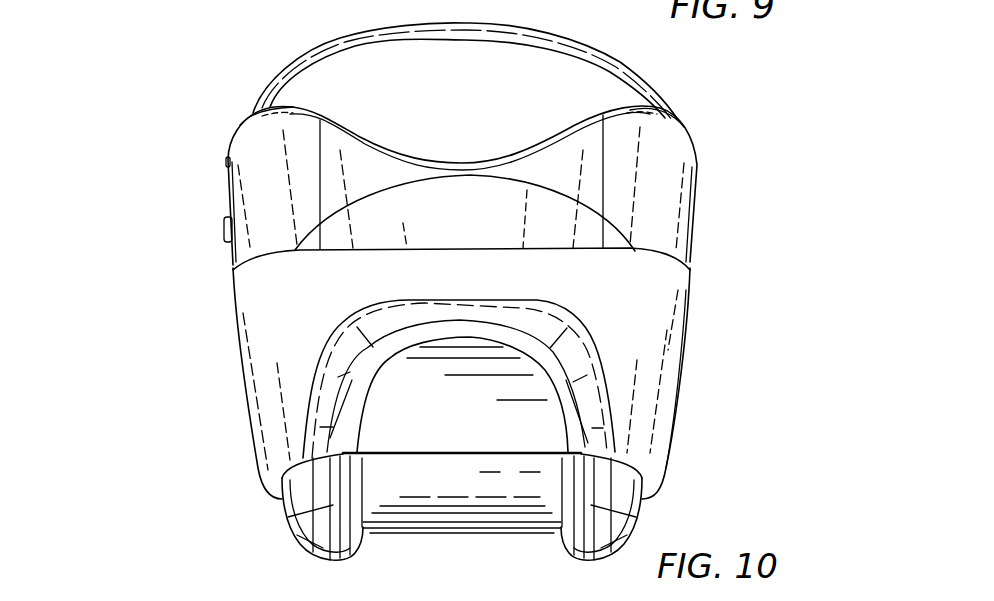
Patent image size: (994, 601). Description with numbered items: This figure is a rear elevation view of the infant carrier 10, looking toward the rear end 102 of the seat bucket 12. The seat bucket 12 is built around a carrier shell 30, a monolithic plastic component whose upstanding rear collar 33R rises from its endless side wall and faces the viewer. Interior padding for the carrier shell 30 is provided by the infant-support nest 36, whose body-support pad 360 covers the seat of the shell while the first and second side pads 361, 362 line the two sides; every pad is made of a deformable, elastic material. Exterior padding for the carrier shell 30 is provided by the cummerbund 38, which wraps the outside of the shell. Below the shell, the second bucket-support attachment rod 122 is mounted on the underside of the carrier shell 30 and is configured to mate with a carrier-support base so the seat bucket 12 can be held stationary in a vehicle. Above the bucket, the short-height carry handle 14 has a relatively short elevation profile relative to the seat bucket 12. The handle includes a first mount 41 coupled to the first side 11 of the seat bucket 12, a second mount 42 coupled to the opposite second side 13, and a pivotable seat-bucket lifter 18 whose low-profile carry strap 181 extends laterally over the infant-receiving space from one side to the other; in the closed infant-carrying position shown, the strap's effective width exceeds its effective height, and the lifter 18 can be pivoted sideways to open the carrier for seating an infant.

The infant carrier 10 is at (115, 297).
The first side 11 is at (692, 333).
The seat bucket 12 is at (236, 335).
The second side 13 is at (232, 307).
The short-height carry handle 14 is at (300, 48).
The pivotable seat-bucket lifter 18 is at (527, 23).
The low-profile carry strap 181 is at (441, 35).
The carrier shell 30 is at (589, 205).
The rear collar 33R is at (495, 228).
The infant-support nest 36 is at (695, 140).
The body-support pad 360 is at (377, 150).
The first side pad 361 is at (660, 135).
The second side pad 362 is at (250, 158).
The cummerbund 38 is at (687, 373).
The first mount 41 is at (697, 250).
The second mount 42 is at (232, 258).
The rear end 102 is at (595, 407).
The second bucket-support attachment rod 122 is at (430, 520).